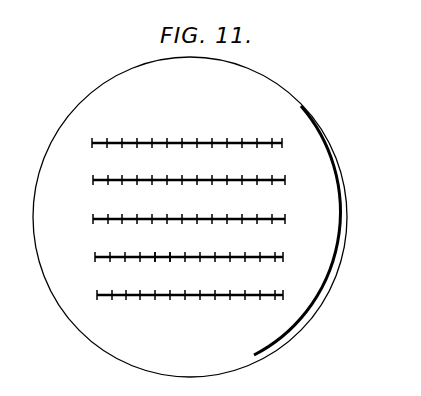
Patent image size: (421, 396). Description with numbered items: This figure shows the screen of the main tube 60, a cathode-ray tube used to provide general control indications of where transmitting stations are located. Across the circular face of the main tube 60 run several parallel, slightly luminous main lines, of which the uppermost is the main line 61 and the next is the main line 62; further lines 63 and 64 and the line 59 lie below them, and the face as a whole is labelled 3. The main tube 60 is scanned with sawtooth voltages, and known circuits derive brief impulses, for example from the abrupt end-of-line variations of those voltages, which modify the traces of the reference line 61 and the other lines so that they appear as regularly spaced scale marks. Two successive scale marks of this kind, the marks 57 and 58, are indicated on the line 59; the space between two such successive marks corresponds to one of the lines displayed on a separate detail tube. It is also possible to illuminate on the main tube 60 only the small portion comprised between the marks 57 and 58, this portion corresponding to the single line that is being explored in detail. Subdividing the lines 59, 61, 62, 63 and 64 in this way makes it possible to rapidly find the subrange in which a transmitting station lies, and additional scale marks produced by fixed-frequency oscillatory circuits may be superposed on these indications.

The substrate 3 is at (363, 212).
The scale mark 57 is at (155, 257).
The scale mark 58 is at (169, 262).
The line 59 is at (283, 257).
The main tube 60 is at (308, 107).
The main line 61 is at (282, 143).
The main line 62 is at (285, 180).
The third scale line 63 is at (285, 219).
The fifth scale line 64 is at (283, 295).